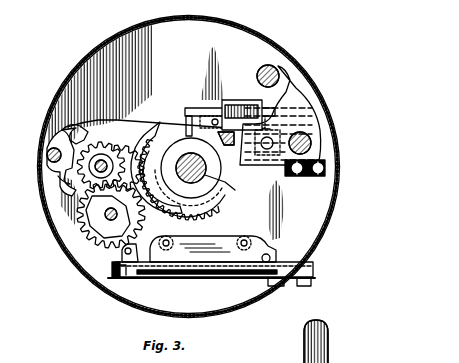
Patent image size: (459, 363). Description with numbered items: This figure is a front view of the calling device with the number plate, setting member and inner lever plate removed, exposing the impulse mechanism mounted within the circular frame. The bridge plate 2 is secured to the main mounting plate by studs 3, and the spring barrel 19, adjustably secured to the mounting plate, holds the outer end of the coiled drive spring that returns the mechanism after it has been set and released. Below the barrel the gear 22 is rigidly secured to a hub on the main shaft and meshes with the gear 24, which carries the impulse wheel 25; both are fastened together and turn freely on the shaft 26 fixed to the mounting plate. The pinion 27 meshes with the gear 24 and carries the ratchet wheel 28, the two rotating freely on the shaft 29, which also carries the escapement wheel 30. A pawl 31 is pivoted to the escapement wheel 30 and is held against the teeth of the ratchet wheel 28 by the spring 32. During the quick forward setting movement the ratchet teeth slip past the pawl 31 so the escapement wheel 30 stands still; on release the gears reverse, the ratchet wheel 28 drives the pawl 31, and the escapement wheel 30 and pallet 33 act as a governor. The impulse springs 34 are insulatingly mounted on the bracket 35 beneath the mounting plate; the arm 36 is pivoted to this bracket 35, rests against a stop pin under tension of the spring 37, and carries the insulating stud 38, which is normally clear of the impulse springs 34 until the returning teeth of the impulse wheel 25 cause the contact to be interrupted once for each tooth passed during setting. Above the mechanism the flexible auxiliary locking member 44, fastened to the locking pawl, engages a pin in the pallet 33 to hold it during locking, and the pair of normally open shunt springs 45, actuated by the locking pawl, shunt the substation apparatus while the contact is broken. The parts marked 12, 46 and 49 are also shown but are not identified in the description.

The bridge plate 2 is at (286, 92).
The studs 3 is at (266, 66).
The post 12 is at (324, 328).
The spring barrel 19 is at (236, 190).
The gear 22 is at (226, 200).
The gear 24 is at (80, 232).
The impulse wheel 25 is at (94, 236).
The shaft 26 is at (105, 214).
The pinion 27 is at (112, 152).
The ratchet wheel 28 is at (108, 150).
The shaft 29 is at (62, 134).
The escapement wheel 30 is at (47, 156).
The pawl 31 is at (122, 156).
The spring 32 is at (58, 180).
The pallet 33 is at (66, 150).
The impulse springs 34 is at (200, 278).
The bracket 35 is at (270, 243).
The arm 36 is at (112, 265).
The spring 37 is at (271, 258).
The insulating stud 38 is at (118, 270).
The auxiliary locking member 44 is at (176, 126).
The shunt springs 45 is at (245, 108).
The bracket 46 is at (192, 145).
The segment 49 is at (165, 160).